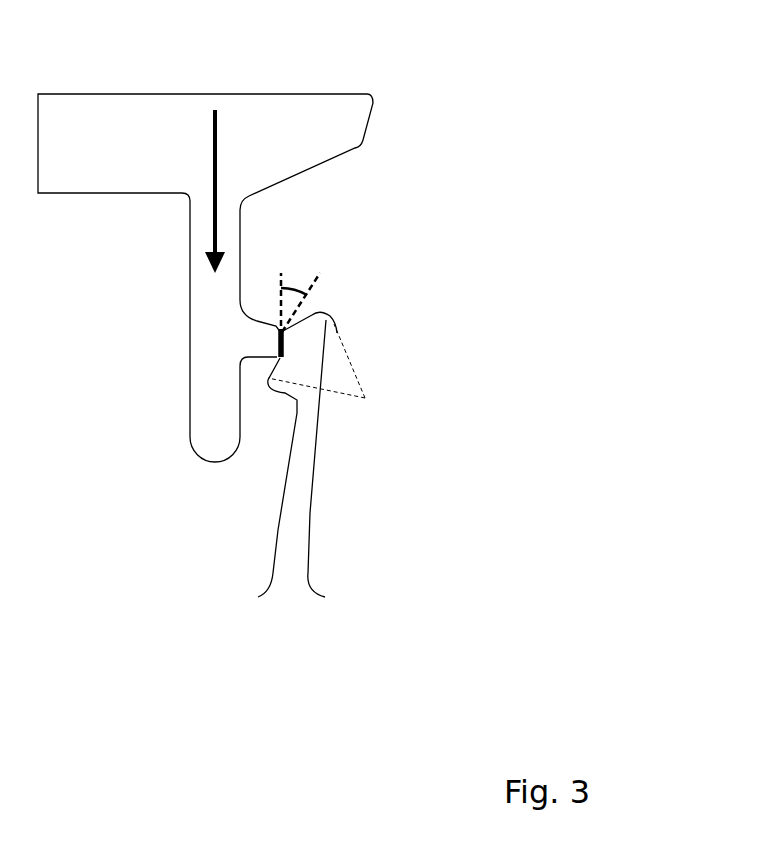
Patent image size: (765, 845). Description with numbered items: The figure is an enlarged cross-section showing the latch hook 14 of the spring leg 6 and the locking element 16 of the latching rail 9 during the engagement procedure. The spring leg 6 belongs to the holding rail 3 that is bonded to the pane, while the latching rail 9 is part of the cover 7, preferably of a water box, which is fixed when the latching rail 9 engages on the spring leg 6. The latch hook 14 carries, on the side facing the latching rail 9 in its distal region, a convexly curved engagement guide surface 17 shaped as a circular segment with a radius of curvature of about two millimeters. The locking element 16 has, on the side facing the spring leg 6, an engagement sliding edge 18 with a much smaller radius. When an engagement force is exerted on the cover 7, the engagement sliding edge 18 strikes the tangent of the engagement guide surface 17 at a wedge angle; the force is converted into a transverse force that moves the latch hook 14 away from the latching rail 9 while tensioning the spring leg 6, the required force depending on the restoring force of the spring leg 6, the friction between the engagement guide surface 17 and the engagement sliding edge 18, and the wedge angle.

The holding rail 3 is at (296, 621).
The spring leg 6 is at (290, 530).
The cover 7 is at (93, 128).
The latching rail 9 is at (222, 418).
The latch hook 14 is at (323, 327).
The locking element 16 is at (265, 327).
The engagement guide surface 17 is at (300, 345).
The engagement sliding edge 18 is at (261, 352).